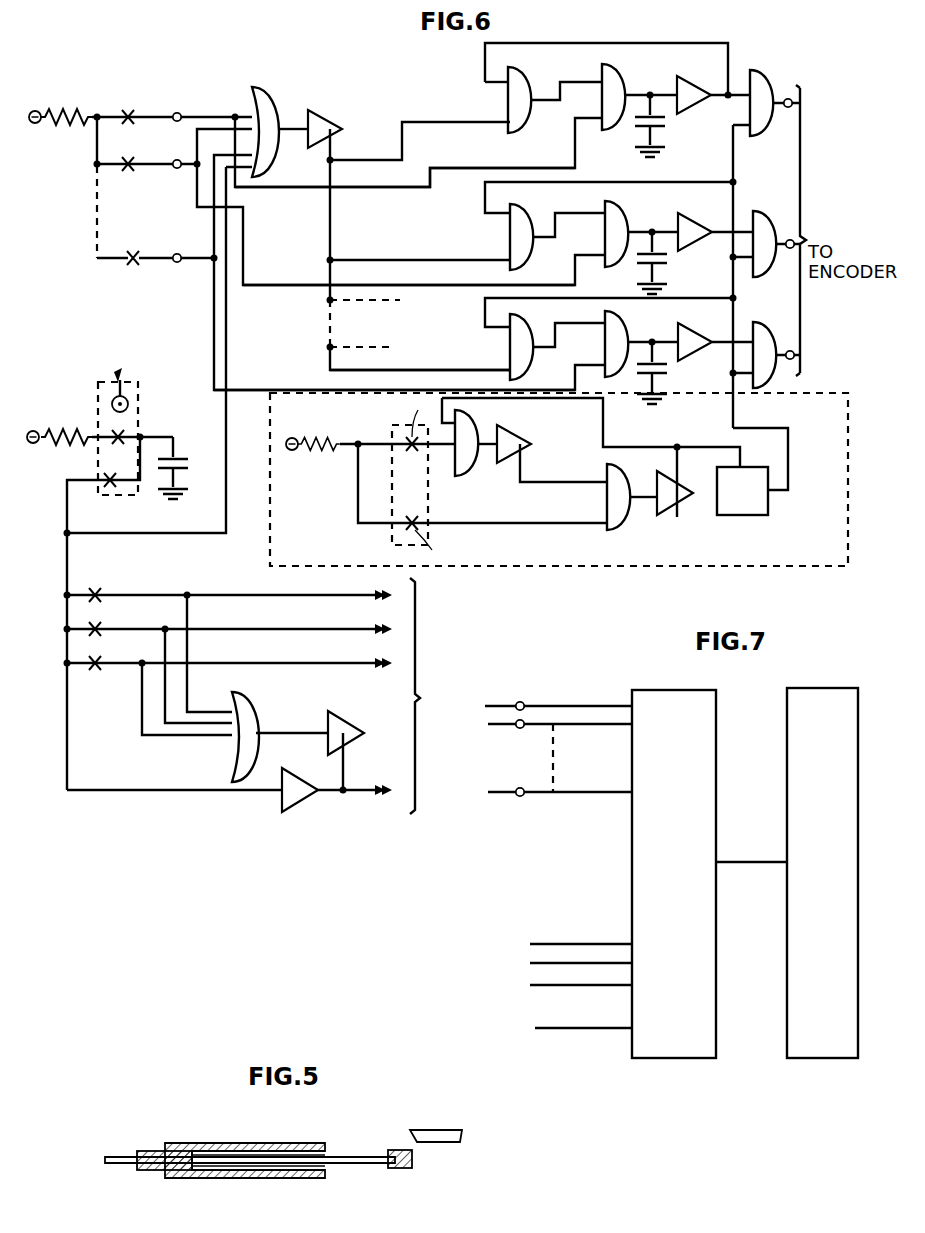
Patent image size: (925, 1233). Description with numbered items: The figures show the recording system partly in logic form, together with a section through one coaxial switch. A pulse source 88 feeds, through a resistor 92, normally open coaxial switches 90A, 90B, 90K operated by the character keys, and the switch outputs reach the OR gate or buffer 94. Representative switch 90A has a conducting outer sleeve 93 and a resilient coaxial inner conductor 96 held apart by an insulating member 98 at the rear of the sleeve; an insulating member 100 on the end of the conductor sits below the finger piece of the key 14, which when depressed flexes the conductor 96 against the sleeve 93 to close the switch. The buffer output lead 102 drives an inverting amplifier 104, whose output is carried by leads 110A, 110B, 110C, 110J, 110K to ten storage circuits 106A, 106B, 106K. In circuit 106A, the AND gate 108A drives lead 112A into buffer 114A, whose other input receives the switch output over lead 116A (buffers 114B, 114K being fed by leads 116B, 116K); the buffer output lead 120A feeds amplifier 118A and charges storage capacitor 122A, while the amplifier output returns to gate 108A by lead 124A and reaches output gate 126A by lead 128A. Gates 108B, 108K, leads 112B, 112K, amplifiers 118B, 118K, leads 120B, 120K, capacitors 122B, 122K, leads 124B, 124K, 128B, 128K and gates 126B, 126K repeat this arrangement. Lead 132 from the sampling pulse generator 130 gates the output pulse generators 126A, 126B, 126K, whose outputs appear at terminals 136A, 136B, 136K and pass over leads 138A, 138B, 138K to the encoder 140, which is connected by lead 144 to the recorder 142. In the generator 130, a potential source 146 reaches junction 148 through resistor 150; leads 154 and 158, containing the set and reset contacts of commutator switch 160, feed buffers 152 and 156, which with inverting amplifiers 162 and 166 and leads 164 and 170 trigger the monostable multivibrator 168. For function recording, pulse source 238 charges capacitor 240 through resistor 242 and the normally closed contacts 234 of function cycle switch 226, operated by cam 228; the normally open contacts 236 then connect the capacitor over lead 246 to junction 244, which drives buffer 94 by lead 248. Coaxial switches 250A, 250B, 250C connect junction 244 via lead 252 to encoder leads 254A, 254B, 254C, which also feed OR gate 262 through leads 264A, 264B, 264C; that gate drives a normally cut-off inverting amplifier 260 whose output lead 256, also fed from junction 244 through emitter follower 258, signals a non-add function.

In FIG. 6, the pulse source 88 is at (40, 113).
In FIG. 6, the resistor 92 is at (72, 126).
In FIG. 6, the coaxial switch 90A is at (128, 110).
In FIG. 5, the coaxial switch 90A is at (193, 1143).
In FIG. 6, the coaxial switch 90B is at (128, 172).
In FIG. 6, the coaxial switch 90K is at (133, 253).
In FIG. 6, the OR gate 94 is at (260, 97).
In FIG. 6, the output lead 102 is at (293, 125).
In FIG. 6, the inverting amplifier 104 is at (322, 112).
In FIG. 6, the lead 110A is at (460, 120).
In FIG. 6, the lead 110B is at (360, 258).
In FIG. 6, the lead 110C is at (355, 300).
In FIG. 6, the lead 110J is at (350, 347).
In FIG. 6, the lead 110K is at (392, 370).
In FIG. 6, the lead 116A is at (427, 168).
In FIG. 6, the lead 116B is at (352, 285).
In FIG. 6, the lead 116K is at (242, 390).
In FIG. 6, the storage circuit 106A is at (600, 42).
In FIG. 6, the storage circuit 106B is at (626, 200).
In FIG. 6, the storage circuit 106K is at (626, 314).
In FIG. 6, the AND gate 108A is at (520, 78).
In FIG. 6, the AND gate 108B is at (494, 237).
In FIG. 6, the AND gate 108K is at (494, 347).
In FIG. 6, the output lead 112A is at (541, 108).
In FIG. 6, the output lead 112B is at (546, 225).
In FIG. 6, the output lead 112K is at (546, 340).
In FIG. 6, the buffer 114A is at (623, 90).
In FIG. 6, the buffer 114B is at (600, 232).
In FIG. 6, the buffer 114K is at (605, 345).
In FIG. 6, the amplifier 118A is at (693, 88).
In FIG. 6, the amplifier 118B is at (733, 215).
In FIG. 6, the amplifier 118K is at (733, 325).
In FIG. 6, the lead 120A is at (657, 134).
In FIG. 6, the lead 120B is at (660, 228).
In FIG. 6, the lead 120K is at (660, 340).
In FIG. 6, the storage capacitor 122A is at (645, 125).
In FIG. 6, the storage capacitor 122B is at (645, 262).
In FIG. 6, the storage capacitor 122K is at (645, 370).
In FIG. 6, the lead 124A is at (645, 42).
In FIG. 6, the lead 124B is at (655, 180).
In FIG. 6, the lead 124K is at (636, 301).
In FIG. 6, the output pulse generator 126A is at (770, 85).
In FIG. 6, the output pulse generator 126B is at (775, 215).
In FIG. 6, the output pulse generator 126K is at (775, 335).
In FIG. 6, the lead 128A is at (737, 85).
In FIG. 6, the lead 128B is at (720, 248).
In FIG. 6, the lead 128K is at (720, 360).
In FIG. 6, the output terminal 136A is at (800, 100).
In FIG. 7, the output terminal 136A is at (516, 702).
In FIG. 6, the output terminal 136B is at (795, 238).
In FIG. 7, the output terminal 136B is at (516, 728).
In FIG. 6, the output terminal 136K is at (795, 355).
In FIG. 7, the output terminal 136K is at (516, 796).
In FIG. 6, the sampling pulse generator 130 is at (835, 522).
In FIG. 6, the lead 132 is at (740, 408).
In FIG. 6, the source of potential 146 is at (300, 436).
In FIG. 6, the junction 148 is at (358, 440).
In FIG. 6, the resistor 150 is at (338, 448).
In FIG. 6, the buffer 152 is at (478, 462).
In FIG. 6, the lead 154 is at (358, 460).
In FIG. 6, the buffer 156 is at (615, 527).
In FIG. 6, the lead 158 is at (548, 524).
In FIG. 6, the commutator switch 160 is at (430, 510).
In FIG. 6, the inverting amplifier 162 is at (523, 428).
In FIG. 6, the lead 164 is at (592, 483).
In FIG. 6, the inverting amplifier 166 is at (663, 512).
In FIG. 6, the monostable multivibrator 168 is at (740, 505).
In FIG. 6, the lead 170 is at (622, 446).
In FIG. 6, the function cycle switch 226 is at (120, 365).
In FIG. 6, the cam 228 is at (126, 398).
In FIG. 6, the normally closed contacts 234 is at (125, 432).
In FIG. 6, the normally open contacts 236 is at (115, 490).
In FIG. 6, the pulse source 238 is at (40, 432).
In FIG. 6, the capacitor 240 is at (190, 462).
In FIG. 6, the resistor 242 is at (80, 430).
In FIG. 6, the junction 244 is at (62, 533).
In FIG. 6, the lead 246 is at (90, 478).
In FIG. 6, the lead 248 is at (228, 480).
In FIG. 6, the lead 252 is at (70, 562).
In FIG. 6, the coaxial switch 250A is at (100, 590).
In FIG. 6, the coaxial switch 250B is at (100, 624).
In FIG. 6, the coaxial switch 250C is at (97, 658).
In FIG. 6, the lead 254A is at (278, 594).
In FIG. 7, the lead 254A is at (557, 942).
In FIG. 6, the lead 254B is at (278, 628).
In FIG. 7, the lead 254B is at (548, 962).
In FIG. 6, the lead 254C is at (278, 662).
In FIG. 7, the lead 254C is at (548, 985).
In FIG. 6, the lead 256 is at (368, 795).
In FIG. 7, the lead 256 is at (612, 1030).
In FIG. 6, the emitter follower 258 is at (280, 808).
In FIG. 6, the inverting amplifier 260 is at (335, 708).
In FIG. 6, the OR gate 262 is at (252, 718).
In FIG. 6, the lead 264A is at (192, 690).
In FIG. 6, the lead 264B is at (160, 712).
In FIG. 6, the lead 264C is at (142, 688).
In FIG. 7, the encoder 140 is at (672, 695).
In FIG. 7, the recorder 142 is at (832, 695).
In FIG. 7, the lead 144 is at (755, 868).
In FIG. 7, the lead 138A is at (545, 703).
In FIG. 7, the lead 138B is at (560, 726).
In FIG. 7, the lead 138K is at (575, 794).
In FIG. 5, the conducting outer sleeve 93 is at (258, 1143).
In FIG. 5, the insulating member 98 is at (150, 1150).
In FIG. 5, the coaxial inner conductor 96 is at (350, 1165).
In FIG. 5, the insulating member 100 is at (402, 1168).
In FIG. 5, the character key 14 is at (438, 1128).